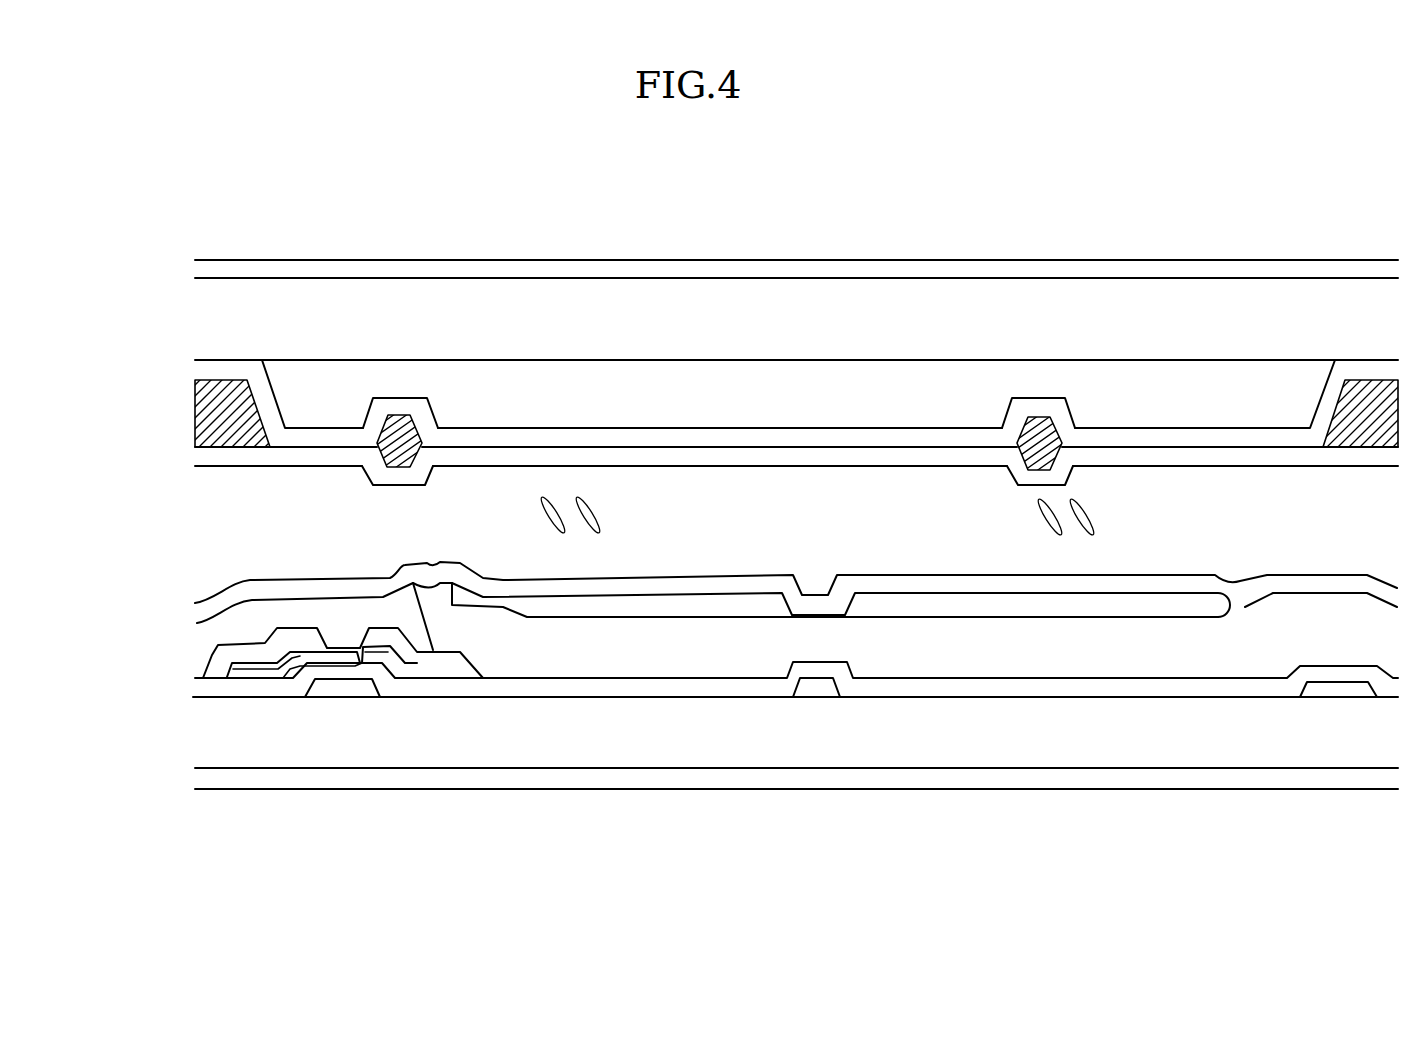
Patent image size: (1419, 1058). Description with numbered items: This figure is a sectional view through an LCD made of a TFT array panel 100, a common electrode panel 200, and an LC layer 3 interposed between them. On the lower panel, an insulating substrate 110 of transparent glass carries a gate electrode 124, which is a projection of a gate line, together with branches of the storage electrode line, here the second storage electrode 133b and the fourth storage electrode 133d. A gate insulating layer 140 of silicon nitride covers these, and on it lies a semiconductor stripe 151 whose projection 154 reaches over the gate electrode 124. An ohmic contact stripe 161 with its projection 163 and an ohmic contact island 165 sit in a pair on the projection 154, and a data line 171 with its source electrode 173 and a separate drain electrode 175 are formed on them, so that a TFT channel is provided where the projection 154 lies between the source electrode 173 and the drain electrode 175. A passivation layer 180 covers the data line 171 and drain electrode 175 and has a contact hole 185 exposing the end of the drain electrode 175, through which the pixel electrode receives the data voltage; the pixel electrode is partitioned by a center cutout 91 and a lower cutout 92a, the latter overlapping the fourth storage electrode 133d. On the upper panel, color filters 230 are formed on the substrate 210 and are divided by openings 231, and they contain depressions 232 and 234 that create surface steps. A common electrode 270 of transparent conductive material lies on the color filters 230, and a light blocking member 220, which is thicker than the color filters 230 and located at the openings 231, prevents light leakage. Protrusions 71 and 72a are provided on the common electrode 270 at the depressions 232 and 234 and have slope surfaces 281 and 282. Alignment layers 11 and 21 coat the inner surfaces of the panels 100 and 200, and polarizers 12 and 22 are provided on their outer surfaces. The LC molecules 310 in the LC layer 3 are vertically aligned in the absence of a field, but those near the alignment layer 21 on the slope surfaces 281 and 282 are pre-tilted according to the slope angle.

The common electrode panel 200 is at (752, 225).
The TFT array panel 100 is at (145, 724).
The LC layer 3 is at (218, 527).
The LC molecules 310 is at (1078, 500).
The polarizer 22 is at (1295, 272).
The substrate 210 is at (604, 287).
The light blocking member 220 is at (240, 380).
The openings 231 is at (256, 289).
The depression 232 is at (419, 384).
The depression 234 is at (1030, 386).
The color filters 230 is at (877, 378).
The common electrode 270 is at (740, 440).
The alignment layer 21 is at (200, 457).
The slope surface 281 is at (378, 470).
The slope surface 282 is at (1020, 460).
The protrusion 71 is at (1018, 487).
The protrusion 72a is at (413, 467).
The alignment layer 11 is at (203, 612).
The center cutout 91 is at (1244, 618).
The lower cutout 92a is at (815, 625).
The passivation layer 180 is at (702, 670).
The contact hole 185 is at (442, 640).
The gate insulating layer 140 is at (890, 693).
The insulating substrate 110 is at (987, 745).
The polarizer 12 is at (1188, 778).
The gate electrode 124 is at (358, 688).
The fourth storage electrode 133d is at (805, 690).
The second storage electrode 133b is at (1337, 692).
The projection 154 is at (332, 660).
The source electrode 173 is at (268, 662).
The projection 163 is at (287, 666).
The ohmic contact stripe 161 is at (222, 664).
The data line 171 is at (247, 668).
The semiconductor stripe 151 is at (262, 664).
The drain electrode 175 is at (440, 660).
The ohmic contact island 165 is at (383, 658).